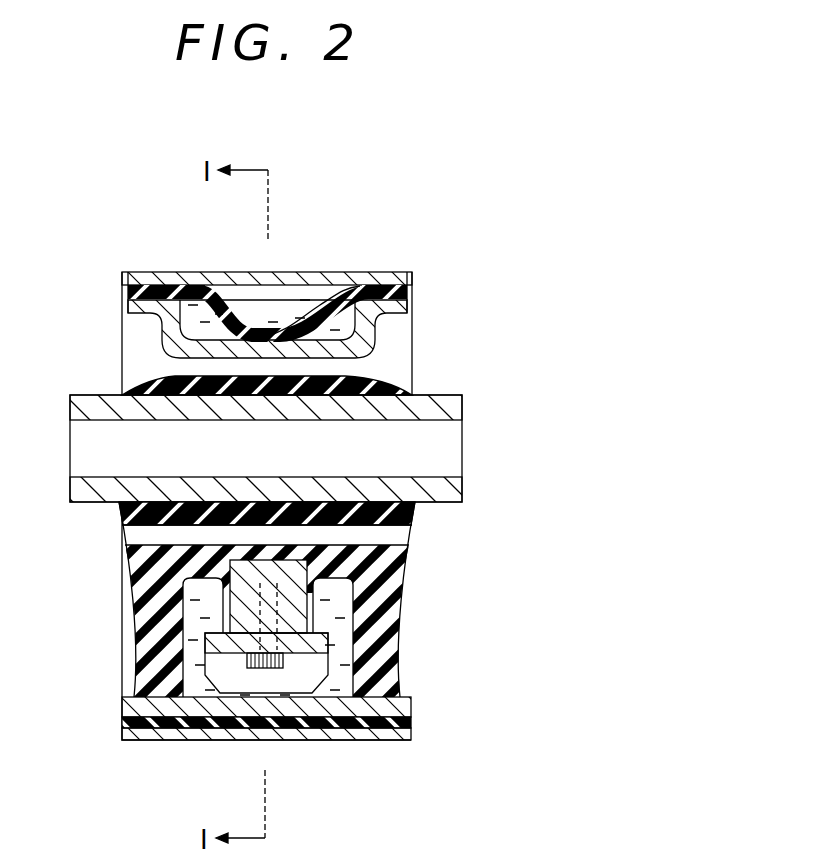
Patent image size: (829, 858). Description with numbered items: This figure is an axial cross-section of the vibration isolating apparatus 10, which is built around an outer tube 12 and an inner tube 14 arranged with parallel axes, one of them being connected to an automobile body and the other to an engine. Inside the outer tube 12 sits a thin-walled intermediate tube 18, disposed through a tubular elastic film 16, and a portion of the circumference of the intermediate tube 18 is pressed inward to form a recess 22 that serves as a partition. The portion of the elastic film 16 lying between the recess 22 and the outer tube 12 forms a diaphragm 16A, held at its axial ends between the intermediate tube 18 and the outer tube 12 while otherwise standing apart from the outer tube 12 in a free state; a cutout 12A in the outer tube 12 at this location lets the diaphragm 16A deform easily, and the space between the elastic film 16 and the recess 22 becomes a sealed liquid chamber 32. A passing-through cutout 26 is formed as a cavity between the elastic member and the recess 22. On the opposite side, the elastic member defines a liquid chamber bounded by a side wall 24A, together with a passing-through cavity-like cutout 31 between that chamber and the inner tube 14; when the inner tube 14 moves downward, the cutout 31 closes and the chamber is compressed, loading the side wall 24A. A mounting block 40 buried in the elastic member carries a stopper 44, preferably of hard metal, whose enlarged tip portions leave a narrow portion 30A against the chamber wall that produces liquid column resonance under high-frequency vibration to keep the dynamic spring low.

The vibration isolating apparatus 10 is at (413, 243).
The outer tube 12 is at (155, 283).
The cutout 12A is at (176, 286).
The inner tube 14 is at (444, 394).
The elastic film 16 is at (399, 740).
The diaphragm 16A is at (262, 305).
The intermediate tube 18 is at (413, 300).
The recess 22 is at (214, 300).
The side wall 24A is at (140, 663).
The passing-through cutout 26 is at (355, 368).
The narrow portion 30A is at (345, 690).
The passing-through cavity-like cutout 31 is at (135, 537).
The sealed liquid chamber 32 is at (312, 315).
The mounting block 40 is at (232, 616).
The stopper 44 is at (310, 636).